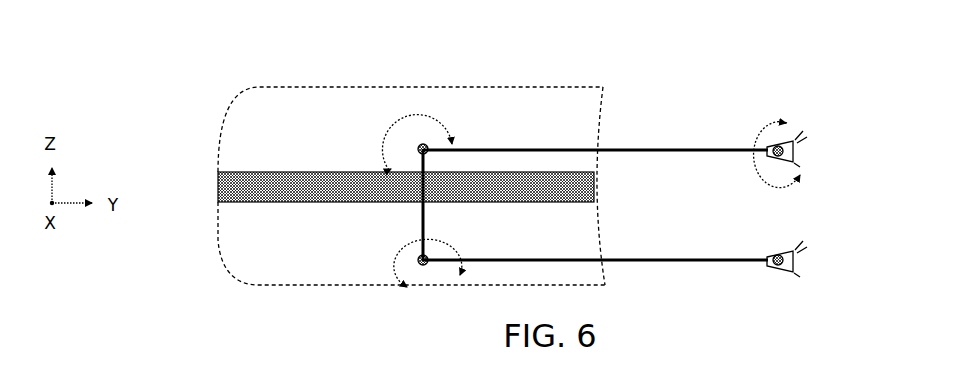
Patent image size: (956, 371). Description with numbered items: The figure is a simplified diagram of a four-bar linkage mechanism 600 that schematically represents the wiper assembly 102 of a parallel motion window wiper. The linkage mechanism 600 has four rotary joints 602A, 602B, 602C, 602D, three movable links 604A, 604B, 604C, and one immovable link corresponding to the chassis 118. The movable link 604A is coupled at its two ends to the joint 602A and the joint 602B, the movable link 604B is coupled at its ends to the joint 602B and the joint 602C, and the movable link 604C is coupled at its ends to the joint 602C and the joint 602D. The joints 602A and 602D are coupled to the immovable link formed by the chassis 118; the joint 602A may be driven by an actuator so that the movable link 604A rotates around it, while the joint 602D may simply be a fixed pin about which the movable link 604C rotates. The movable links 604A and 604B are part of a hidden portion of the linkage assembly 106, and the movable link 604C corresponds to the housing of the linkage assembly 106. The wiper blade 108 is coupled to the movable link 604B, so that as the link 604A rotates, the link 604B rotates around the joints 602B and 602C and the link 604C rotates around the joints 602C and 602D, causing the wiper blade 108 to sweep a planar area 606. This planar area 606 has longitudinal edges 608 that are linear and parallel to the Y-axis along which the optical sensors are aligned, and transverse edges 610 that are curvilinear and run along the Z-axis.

The wiper assembly 102 is at (230, 44).
The linkage assembly 106 is at (619, 105).
The wiper blade 108 is at (214, 180).
The chassis 118 is at (798, 148).
The four-bar linkage mechanism 600 is at (186, 101).
The joint 602A is at (778, 145).
The joint 602B is at (423, 144).
The joint 602C is at (424, 265).
The joint 602D is at (779, 267).
The movable link 604A is at (682, 148).
The movable link 604B is at (419, 218).
The movable link 604C is at (684, 262).
The planar area 606 is at (313, 85).
The longitudinal edges 608 is at (486, 86).
The transverse edges 610 is at (224, 250).